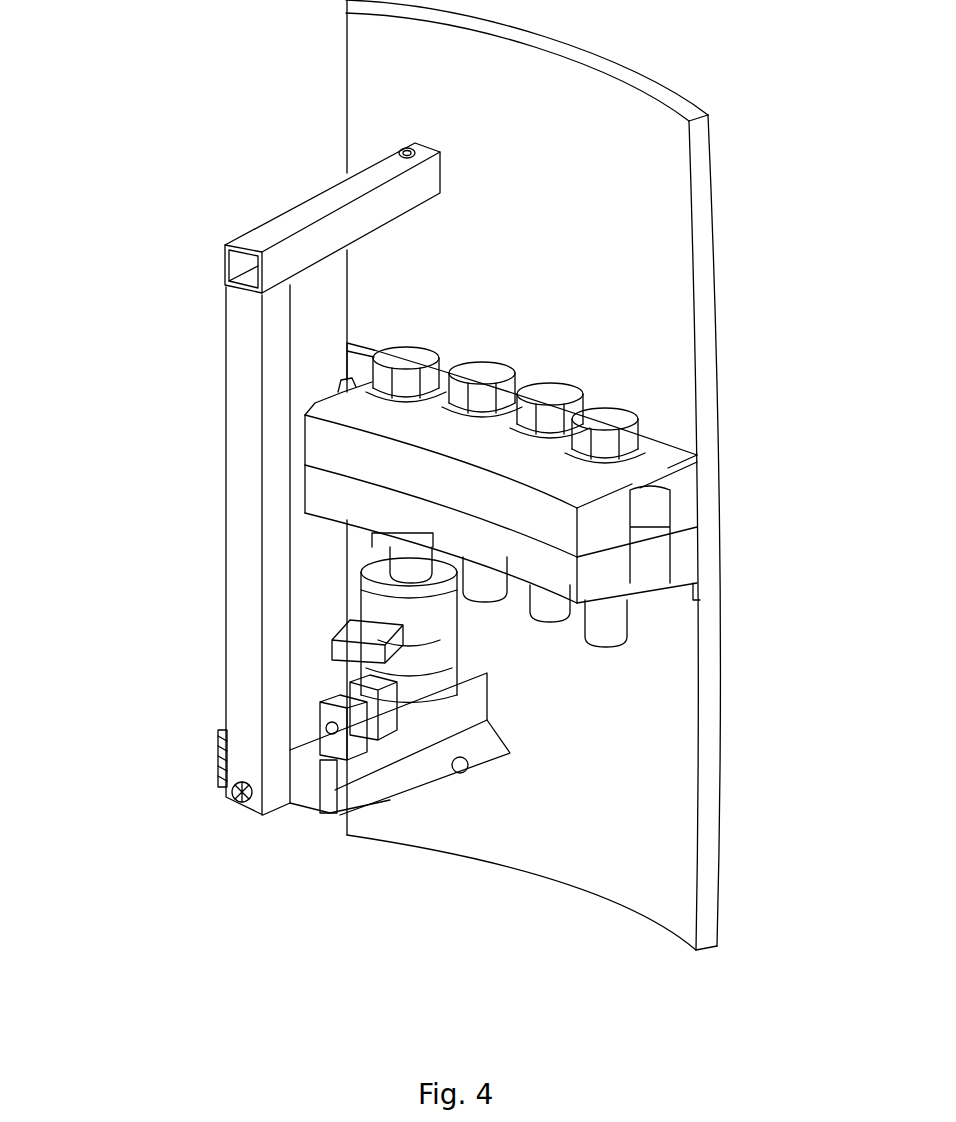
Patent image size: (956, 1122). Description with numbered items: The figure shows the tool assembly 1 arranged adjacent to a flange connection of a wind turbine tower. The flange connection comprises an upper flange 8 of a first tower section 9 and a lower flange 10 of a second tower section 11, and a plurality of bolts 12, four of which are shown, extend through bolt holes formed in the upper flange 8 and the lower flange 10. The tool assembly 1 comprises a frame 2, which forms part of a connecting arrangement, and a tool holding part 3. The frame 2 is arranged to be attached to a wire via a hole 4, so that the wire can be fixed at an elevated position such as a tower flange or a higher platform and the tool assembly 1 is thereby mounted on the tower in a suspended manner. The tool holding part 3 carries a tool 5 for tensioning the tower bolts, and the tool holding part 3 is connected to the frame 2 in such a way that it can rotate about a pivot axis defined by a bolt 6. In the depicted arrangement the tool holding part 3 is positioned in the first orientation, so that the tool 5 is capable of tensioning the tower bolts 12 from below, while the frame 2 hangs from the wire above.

The tool assembly 1 is at (182, 532).
The frame 2 is at (322, 200).
The tool holding part 3 is at (415, 750).
The hole 4 is at (403, 150).
The tool 5 is at (450, 660).
The bolt 6 is at (234, 797).
The upper flange 8 is at (540, 556).
The first tower section 9 is at (660, 780).
The lower flange 10 is at (603, 490).
The second tower section 11 is at (622, 272).
The bolts 12 is at (605, 424).